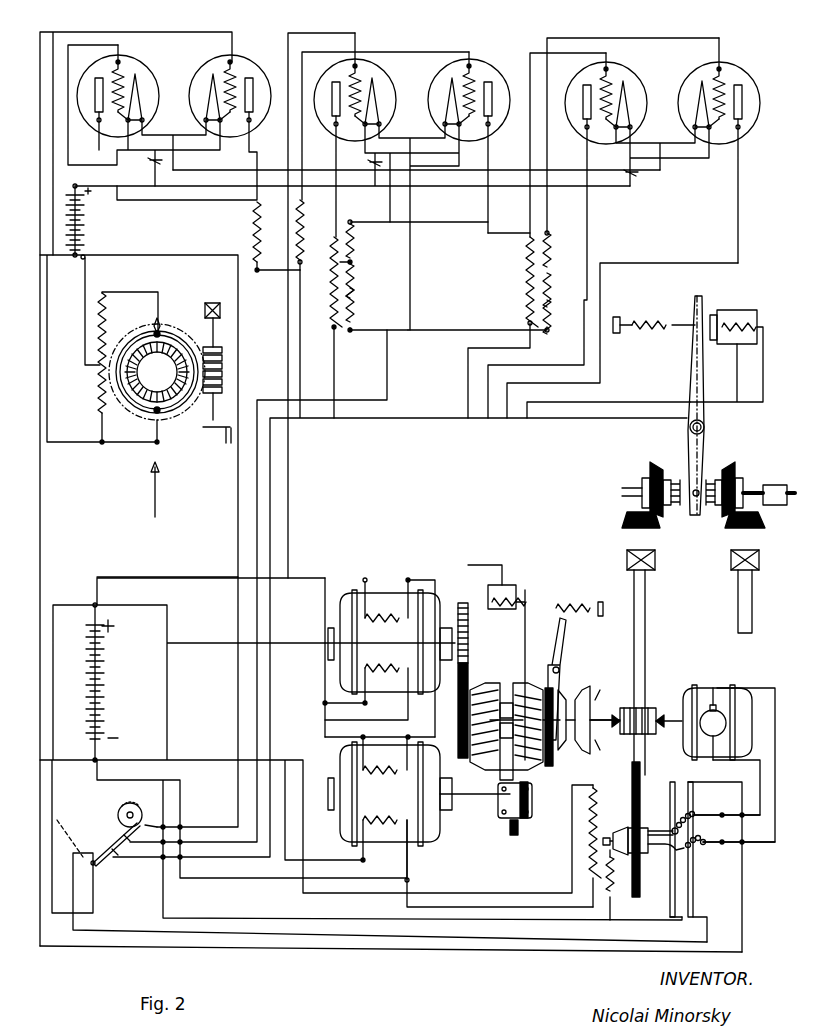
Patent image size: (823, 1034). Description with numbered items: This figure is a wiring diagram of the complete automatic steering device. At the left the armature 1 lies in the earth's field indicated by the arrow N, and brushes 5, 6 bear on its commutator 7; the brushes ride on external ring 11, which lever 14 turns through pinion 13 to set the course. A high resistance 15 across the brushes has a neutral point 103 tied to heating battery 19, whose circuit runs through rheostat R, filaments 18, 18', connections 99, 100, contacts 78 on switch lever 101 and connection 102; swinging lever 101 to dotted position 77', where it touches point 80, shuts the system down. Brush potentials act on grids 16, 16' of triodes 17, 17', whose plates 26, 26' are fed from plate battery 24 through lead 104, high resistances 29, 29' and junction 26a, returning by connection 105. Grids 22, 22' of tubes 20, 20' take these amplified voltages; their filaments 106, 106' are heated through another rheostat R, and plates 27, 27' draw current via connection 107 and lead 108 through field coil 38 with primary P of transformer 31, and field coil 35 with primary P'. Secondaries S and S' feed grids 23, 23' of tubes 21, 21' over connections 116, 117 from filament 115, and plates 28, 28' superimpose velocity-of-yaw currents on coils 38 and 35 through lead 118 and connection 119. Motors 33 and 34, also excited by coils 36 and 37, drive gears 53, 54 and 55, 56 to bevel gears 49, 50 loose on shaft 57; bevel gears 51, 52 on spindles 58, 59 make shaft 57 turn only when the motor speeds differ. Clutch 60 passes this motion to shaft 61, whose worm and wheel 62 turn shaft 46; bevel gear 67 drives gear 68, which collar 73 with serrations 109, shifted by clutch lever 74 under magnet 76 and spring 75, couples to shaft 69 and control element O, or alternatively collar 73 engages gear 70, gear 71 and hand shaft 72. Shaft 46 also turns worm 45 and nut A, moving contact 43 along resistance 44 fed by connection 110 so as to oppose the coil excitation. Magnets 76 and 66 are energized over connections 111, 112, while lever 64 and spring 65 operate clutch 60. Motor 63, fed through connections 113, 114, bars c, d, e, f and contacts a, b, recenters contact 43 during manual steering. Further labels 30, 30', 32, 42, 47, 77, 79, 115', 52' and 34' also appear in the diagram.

The armature 1 is at (157, 372).
The brush 5 is at (150, 338).
The brush 6 is at (162, 412).
The commutator 7 is at (148, 398).
The external ring 11 is at (158, 320).
The pinion 13 is at (214, 302).
The manually operated lever 14 is at (214, 431).
The resistance 15 is at (100, 396).
The control electrode 16 is at (134, 82).
The control electrode 16' is at (253, 82).
The vacuum tube 17 is at (129, 96).
The vacuum tube 17' is at (230, 79).
The electron emitting electrode 18 is at (152, 105).
The electron emitting electrode 18' is at (200, 82).
The battery 19 is at (87, 221).
The vacuum tube 20 is at (365, 100).
The vacuum tube 20' is at (469, 85).
The vacuum tube 21 is at (617, 103).
The vacuum tube 21' is at (732, 103).
The control electrode 22 is at (380, 79).
The control electrode 22' is at (493, 89).
The control electrode 23 is at (631, 89).
The control electrode 23' is at (737, 83).
The plate battery 24 is at (104, 683).
The plate electrode 26 is at (82, 112).
The plate electrode 26' is at (165, 433).
The junction point 26a is at (276, 235).
The plate 27 is at (320, 113).
The plate 27' is at (501, 114).
The plate 28 is at (568, 115).
The plate 28' is at (756, 119).
The high resistance 29 is at (239, 224).
The high resistance 29' is at (312, 235).
The conductor 30 is at (271, 288).
The conductor 30' is at (324, 274).
The transformer 31 is at (360, 279).
The relay winding 32 is at (417, 239).
The direct current motor 33 is at (345, 618).
The direct current motor 34 is at (405, 799).
The field coil 35 is at (377, 605).
The field coil 36 is at (398, 665).
The field coil 37 is at (380, 822).
The field coil 38 is at (382, 775).
The conductor 42 is at (380, 738).
The contact 43 is at (606, 840).
The resistance 44 is at (595, 807).
The worm 45 is at (642, 790).
The shaft 46 is at (646, 598).
The conductor 47 is at (355, 657).
The bevel gear 49 is at (480, 690).
The bevel gear 50 is at (563, 700).
The bevel gear 51 is at (533, 695).
The bevel gear 52 is at (500, 774).
The gear 53 is at (468, 628).
The spur gear 54 is at (469, 723).
The gear 55 is at (525, 826).
The gear 56 is at (548, 672).
The shaft 57 is at (550, 760).
The spindle 58 is at (508, 700).
The spindle 59 is at (518, 764).
The clutch 60 is at (598, 700).
The shaft 61 is at (604, 726).
The wheel 62 is at (650, 708).
The electric motor 63 is at (705, 695).
The lever 64 is at (560, 640).
The spring 65 is at (586, 600).
The magnet 66 is at (512, 590).
The bevel gear 67 is at (624, 518).
The gear 68 is at (655, 470).
The shaft 69 is at (630, 490).
The bevel gear 70 is at (728, 475).
The bevel gear 71 is at (755, 526).
The shaft 72 is at (752, 598).
The collar 73 is at (699, 490).
The clutch lever 74 is at (690, 366).
The spring 75 is at (660, 322).
The magnet 76 is at (732, 315).
The switch 77 is at (120, 825).
The dotted line position 77' is at (70, 831).
The contacts 78 is at (133, 828).
The switch arm 79 is at (116, 853).
The point 80 is at (85, 872).
The connection 99 is at (203, 200).
The connection 100 is at (389, 382).
The switch lever 101 is at (148, 823).
The connection 102 is at (238, 524).
The neutral point 103 is at (86, 360).
The lead 104 is at (290, 478).
The connection 105 is at (41, 534).
The filament 106 is at (399, 102).
The filament 106' is at (433, 72).
The connection 107 is at (296, 645).
The lead 108 is at (472, 168).
The serrations 109 is at (674, 508).
The connection 110 is at (268, 912).
The connection 111 is at (57, 700).
The connection 112 is at (215, 878).
The connection 113 is at (468, 949).
The connection 114 is at (557, 950).
The filament 115 is at (657, 74).
The tube grid 115' is at (732, 70).
The connection 116 is at (606, 188).
The connection 117 is at (411, 264).
The lead 118 is at (487, 465).
The connection 119 is at (601, 297).
The rheostat R is at (150, 161).
The primary coil P is at (320, 327).
The secondary coil S is at (285, 408).
The primary coil P' is at (513, 280).
The secondary coil S' is at (555, 317).
The relay winding 52' is at (560, 248).
The relay winding 34' is at (523, 286).
The arrow N is at (163, 489).
The control element O is at (776, 488).
The nut A is at (632, 853).
The contact a is at (672, 830).
The contact b is at (695, 845).
The conducting bar c is at (670, 797).
The conducting bar d is at (670, 860).
The conducting bar e is at (696, 849).
The conducting bar f is at (693, 897).